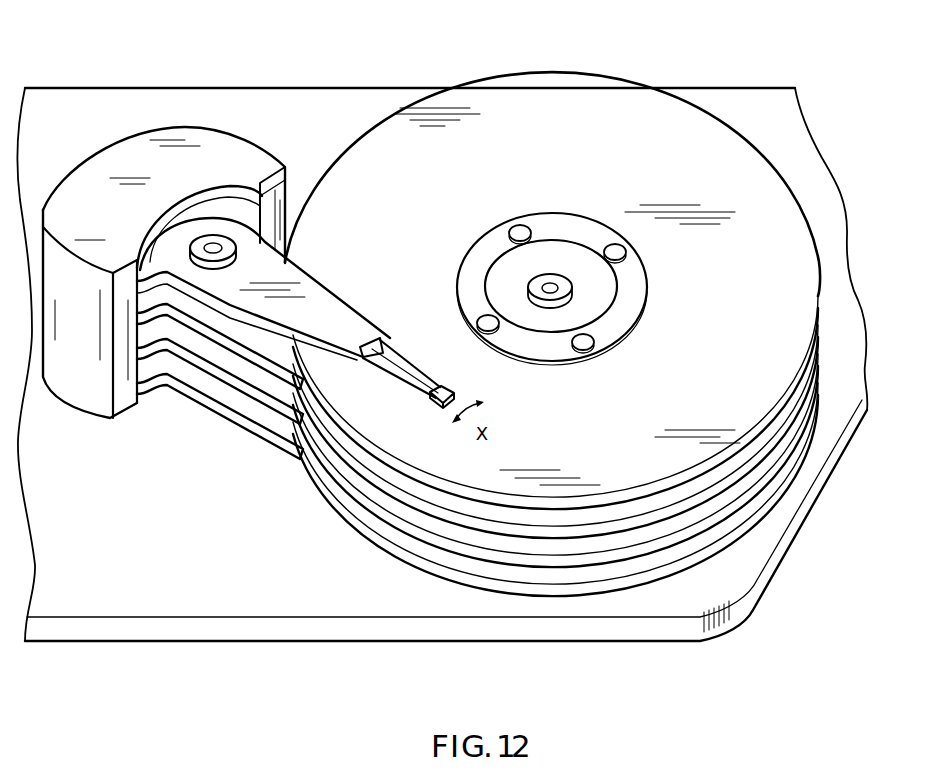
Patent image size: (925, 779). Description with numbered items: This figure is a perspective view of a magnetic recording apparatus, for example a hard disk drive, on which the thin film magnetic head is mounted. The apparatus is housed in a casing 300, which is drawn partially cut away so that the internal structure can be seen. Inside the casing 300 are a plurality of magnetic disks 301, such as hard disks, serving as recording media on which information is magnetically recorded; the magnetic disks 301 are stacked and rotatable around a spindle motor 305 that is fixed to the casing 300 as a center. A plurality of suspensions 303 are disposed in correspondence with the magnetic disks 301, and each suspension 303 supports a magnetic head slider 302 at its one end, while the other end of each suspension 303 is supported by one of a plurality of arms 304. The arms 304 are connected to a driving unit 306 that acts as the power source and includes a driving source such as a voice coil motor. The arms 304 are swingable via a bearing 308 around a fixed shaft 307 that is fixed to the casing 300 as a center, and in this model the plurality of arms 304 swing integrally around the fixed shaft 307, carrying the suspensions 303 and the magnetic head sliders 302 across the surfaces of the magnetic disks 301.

The casing 300 is at (740, 105).
The magnetic disk 301 is at (753, 262).
The magnetic head slider 302 is at (433, 378).
The suspension 303 is at (404, 370).
The arm 304 is at (324, 313).
The spindle motor 305 is at (550, 293).
The driving unit 306 is at (116, 130).
The fixed shaft 307 is at (213, 247).
The bearing 308 is at (199, 248).